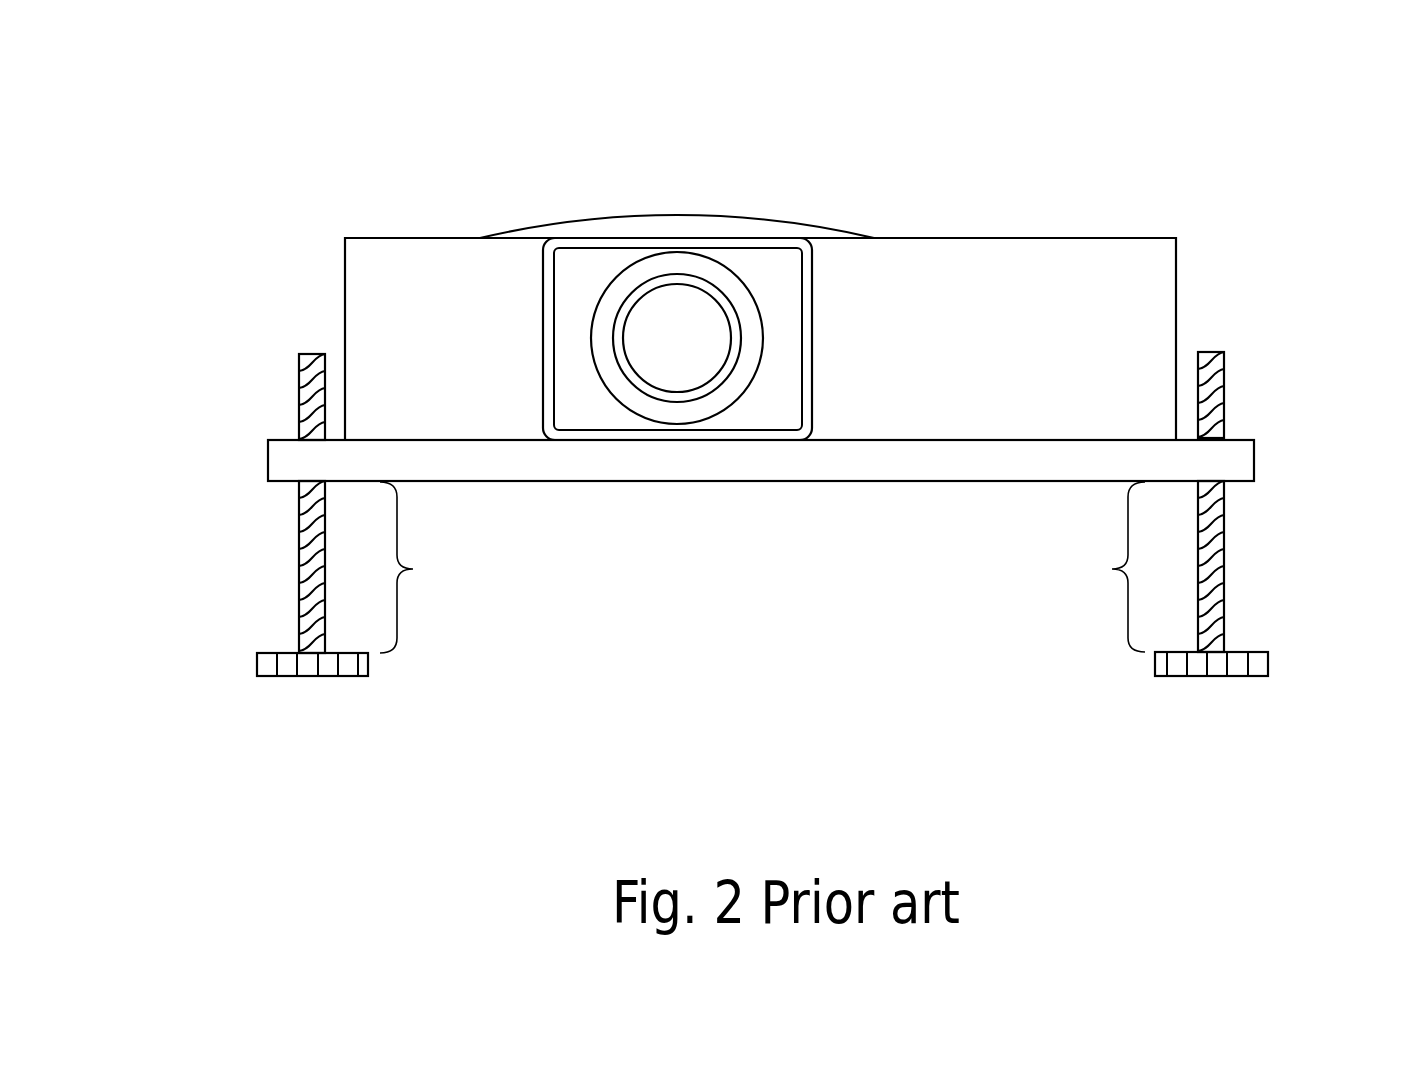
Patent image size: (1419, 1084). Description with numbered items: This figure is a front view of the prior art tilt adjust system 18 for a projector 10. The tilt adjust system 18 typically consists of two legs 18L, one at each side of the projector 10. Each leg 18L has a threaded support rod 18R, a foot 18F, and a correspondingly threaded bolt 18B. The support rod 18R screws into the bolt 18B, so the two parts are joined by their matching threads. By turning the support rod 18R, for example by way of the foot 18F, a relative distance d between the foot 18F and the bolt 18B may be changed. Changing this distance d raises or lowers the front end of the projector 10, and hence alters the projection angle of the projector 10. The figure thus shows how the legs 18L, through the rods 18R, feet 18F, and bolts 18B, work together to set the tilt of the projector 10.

The projector 10 is at (1030, 188).
The tilt adjust system 18 is at (756, 557).
The threaded support rod 18R is at (299, 394).
The threaded bolt 18B is at (268, 460).
The leg 18L is at (756, 509).
The foot 18F is at (1273, 690).
The relative distance d is at (762, 567).